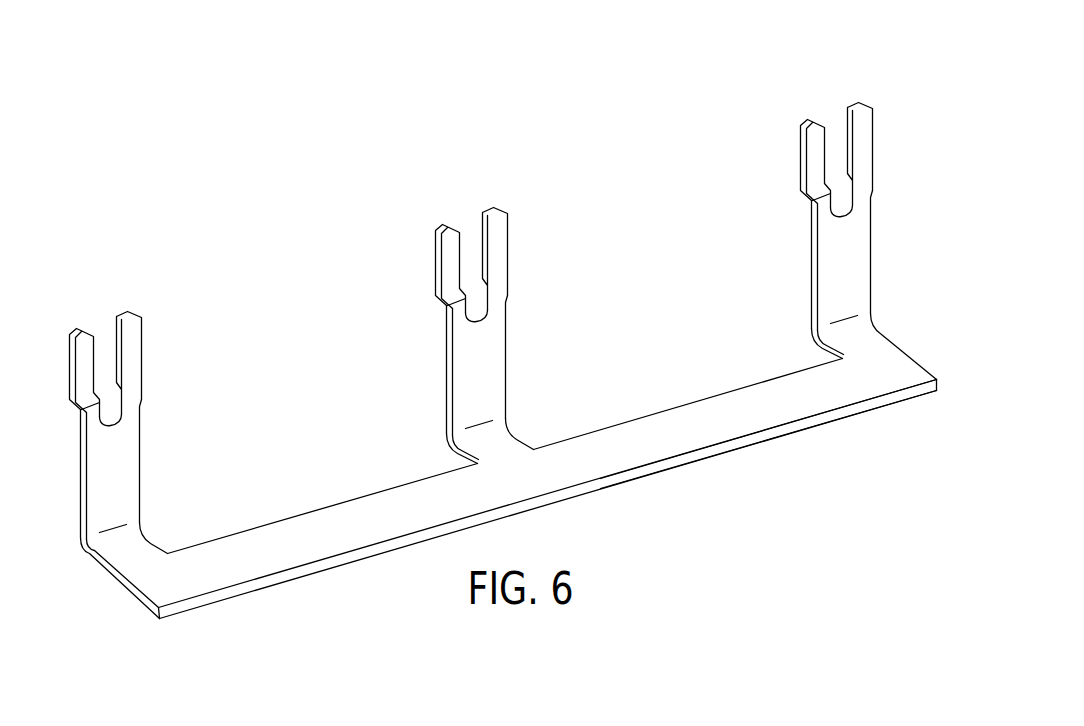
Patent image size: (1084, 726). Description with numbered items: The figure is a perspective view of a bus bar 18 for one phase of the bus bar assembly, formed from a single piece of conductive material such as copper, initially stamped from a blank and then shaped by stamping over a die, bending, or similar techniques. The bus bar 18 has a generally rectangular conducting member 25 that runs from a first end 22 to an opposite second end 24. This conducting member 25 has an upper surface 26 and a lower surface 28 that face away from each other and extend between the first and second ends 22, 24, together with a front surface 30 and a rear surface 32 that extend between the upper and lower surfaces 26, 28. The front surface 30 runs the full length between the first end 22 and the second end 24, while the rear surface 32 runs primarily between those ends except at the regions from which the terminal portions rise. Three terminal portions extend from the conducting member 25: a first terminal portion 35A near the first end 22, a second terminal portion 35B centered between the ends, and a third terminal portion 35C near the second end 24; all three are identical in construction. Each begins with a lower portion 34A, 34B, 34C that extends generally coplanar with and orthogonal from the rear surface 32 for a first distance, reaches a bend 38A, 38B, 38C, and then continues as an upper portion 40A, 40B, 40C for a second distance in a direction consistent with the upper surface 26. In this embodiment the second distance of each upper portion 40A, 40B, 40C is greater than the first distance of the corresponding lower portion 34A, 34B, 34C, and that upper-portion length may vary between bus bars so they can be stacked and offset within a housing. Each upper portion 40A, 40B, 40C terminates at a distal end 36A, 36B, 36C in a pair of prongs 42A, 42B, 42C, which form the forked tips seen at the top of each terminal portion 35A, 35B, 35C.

The bus bar 18 is at (907, 142).
The first end 22 is at (122, 582).
The second end 24 is at (923, 357).
The generally rectangular conducting member 25 is at (723, 475).
The upper surface 26 is at (667, 430).
The lower surface 28 is at (593, 498).
The front surface 30 is at (850, 412).
The rear surface 32 is at (731, 387).
The lower portion 34A is at (142, 548).
The lower portion 34B is at (522, 438).
The lower portion 34C is at (867, 337).
The first terminal portion 35A is at (148, 303).
The second terminal portion 35B is at (513, 210).
The third terminal portion 35C is at (873, 103).
The distal end 36A is at (82, 325).
The distal end 36B is at (442, 220).
The distal end 36C is at (807, 117).
The bend 38A is at (84, 548).
The bend 38B is at (447, 448).
The bend 38C is at (813, 343).
The upper portion 40A is at (139, 466).
The upper portion 40B is at (446, 372).
The upper portion 40C is at (817, 263).
The pair of prongs 42A is at (132, 360).
The pair of prongs 42B is at (448, 257).
The pair of prongs 42C is at (815, 160).